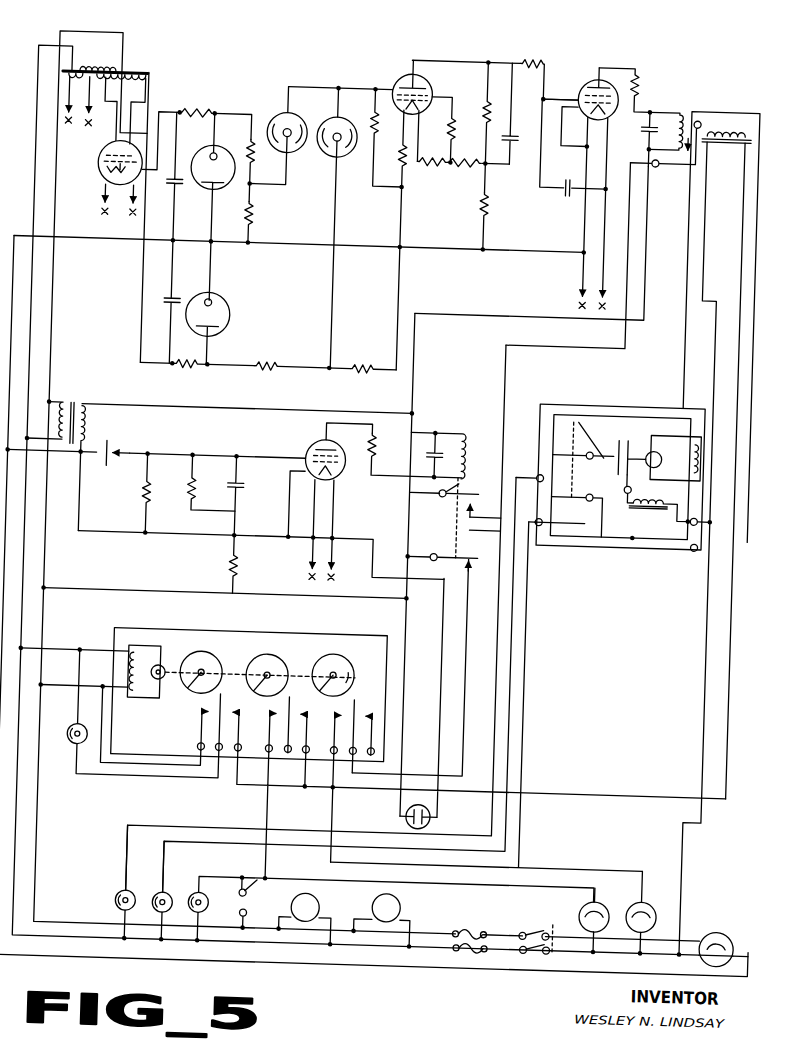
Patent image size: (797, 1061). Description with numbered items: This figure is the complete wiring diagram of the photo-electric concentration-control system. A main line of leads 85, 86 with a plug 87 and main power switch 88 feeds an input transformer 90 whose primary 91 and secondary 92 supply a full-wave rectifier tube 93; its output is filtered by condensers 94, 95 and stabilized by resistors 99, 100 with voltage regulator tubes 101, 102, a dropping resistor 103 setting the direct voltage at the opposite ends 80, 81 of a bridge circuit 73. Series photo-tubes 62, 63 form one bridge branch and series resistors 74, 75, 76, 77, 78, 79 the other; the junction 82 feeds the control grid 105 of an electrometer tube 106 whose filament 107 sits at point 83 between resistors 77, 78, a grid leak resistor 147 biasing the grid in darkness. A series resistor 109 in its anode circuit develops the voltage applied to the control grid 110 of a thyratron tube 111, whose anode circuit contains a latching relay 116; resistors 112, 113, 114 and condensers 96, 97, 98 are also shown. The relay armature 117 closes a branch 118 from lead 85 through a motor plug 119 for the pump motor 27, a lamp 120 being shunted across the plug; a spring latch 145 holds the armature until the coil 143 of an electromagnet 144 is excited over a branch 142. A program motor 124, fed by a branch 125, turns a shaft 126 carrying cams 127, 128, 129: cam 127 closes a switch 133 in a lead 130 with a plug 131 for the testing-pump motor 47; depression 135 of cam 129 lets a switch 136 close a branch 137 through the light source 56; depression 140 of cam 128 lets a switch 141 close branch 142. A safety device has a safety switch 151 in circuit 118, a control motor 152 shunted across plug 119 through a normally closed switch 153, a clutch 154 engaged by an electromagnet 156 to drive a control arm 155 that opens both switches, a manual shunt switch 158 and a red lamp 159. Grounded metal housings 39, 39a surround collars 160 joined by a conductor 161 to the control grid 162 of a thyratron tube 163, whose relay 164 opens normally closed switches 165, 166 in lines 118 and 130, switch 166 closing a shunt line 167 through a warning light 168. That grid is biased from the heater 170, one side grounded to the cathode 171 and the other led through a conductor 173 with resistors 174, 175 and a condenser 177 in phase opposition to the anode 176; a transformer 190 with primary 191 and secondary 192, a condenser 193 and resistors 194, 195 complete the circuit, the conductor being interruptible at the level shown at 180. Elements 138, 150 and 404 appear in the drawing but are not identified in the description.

The electric motor 27 is at (622, 895).
The metal housing 39 is at (119, 440).
The metal housing 39a is at (126, 431).
The electric motor 47 is at (672, 895).
The source of light 56 is at (90, 727).
The photo-tube 62 is at (286, 104).
The photo-tube 63 is at (346, 149).
The bridge circuit 73 is at (292, 78).
The resistor 74 is at (259, 206).
The resistor 75 is at (494, 193).
The resistor 76 is at (470, 161).
The resistor 77 is at (429, 161).
The resistor 78 is at (404, 161).
The resistor 79 is at (375, 352).
The end of bridge circuit 80 is at (250, 180).
The end of bridge circuit 81 is at (336, 366).
The junction of photo tubes 82 is at (341, 77).
The selected point of bridge branch 83 is at (438, 97).
The main power line lead 85 is at (62, 314).
The main power line lead 86 is at (41, 283).
The plug 87 is at (749, 924).
The main power control switch 88 is at (556, 938).
The input transformer 90 is at (151, 68).
The primary 91 is at (93, 64).
The secondary 92 is at (150, 81).
The full-wave rectifier tube 93 is at (104, 166).
The condenser 94 is at (174, 181).
The condenser 95 is at (172, 295).
The condenser 96 is at (517, 128).
The condenser 97 is at (572, 181).
The condenser 98 is at (663, 90).
The resistor 99 is at (203, 106).
The resistor 100 is at (190, 367).
The voltage regulator tube 101 is at (207, 151).
The voltage regulator tube 102 is at (232, 314).
The dropping resistor 103 is at (254, 140).
The control grid 105 is at (407, 68).
The electrometer tube 106 is at (432, 72).
The filament 107 is at (383, 112).
The series resistor 109 is at (488, 98).
The control grid 110 is at (583, 72).
The thyratron tube 111 is at (602, 50).
The resistor 112 is at (456, 121).
The resistor 113 is at (531, 45).
The resistor 114 is at (641, 58).
The relay 116 is at (685, 95).
The armature 117 is at (678, 148).
The power branch 118 is at (637, 227).
The motor plug 119 is at (606, 901).
The lamp 120 is at (235, 895).
The program motor 124 is at (181, 645).
The power branch 125 is at (78, 647).
The shaft 126 is at (267, 665).
The rotary cam 127 is at (363, 660).
The rotary cam 128 is at (297, 655).
The rotary cam 129 is at (231, 639).
The lead 130 is at (487, 636).
The plug 131 is at (673, 906).
The switch 133 is at (391, 703).
The depression 135 is at (210, 683).
The switch 136 is at (237, 705).
The power branch 137 is at (157, 760).
The cam switch contact 138 is at (326, 705).
The depression 140 is at (289, 707).
The switch 141 is at (313, 706).
The power branch 142 is at (749, 203).
The coil 143 is at (731, 113).
The electromagnet 144 is at (726, 163).
The spring latch 145 is at (720, 187).
The grid leak resistor 147 is at (376, 106).
The relay unit housing 150 is at (622, 400).
The safety switch 151 is at (586, 484).
The control motor 152 is at (684, 410).
The switch 153 is at (552, 440).
The clutch 154 is at (632, 425).
The control arm 155 is at (592, 404).
The electromagnet 156 is at (652, 489).
The shunt switch 158 is at (318, 898).
The red lamp 159 is at (190, 886).
The collar 160 is at (130, 449).
The conductor 161 is at (163, 450).
The control grid 162 is at (326, 440).
The thyratron tube 163 is at (333, 468).
The relay 164 is at (488, 403).
The switch 165 is at (462, 480).
The switch 166 is at (468, 543).
The shunt line 167 is at (514, 604).
The warning light 168 is at (141, 891).
The heater 170 is at (330, 472).
The cathode 171 is at (252, 501).
The conductor 173 is at (390, 545).
The resistor 174 is at (253, 552).
The resistor 175 is at (209, 491).
The anode 176 is at (342, 436).
The condenser 177 is at (252, 479).
The interrupted conductor location 180 is at (428, 809).
The transformer 190 is at (88, 400).
The primary 191 is at (76, 400).
The secondary 192 is at (97, 403).
The condenser 193 is at (446, 425).
The resistor 194 is at (165, 499).
The resistor 195 is at (386, 441).
The resistor 404 is at (268, 366).